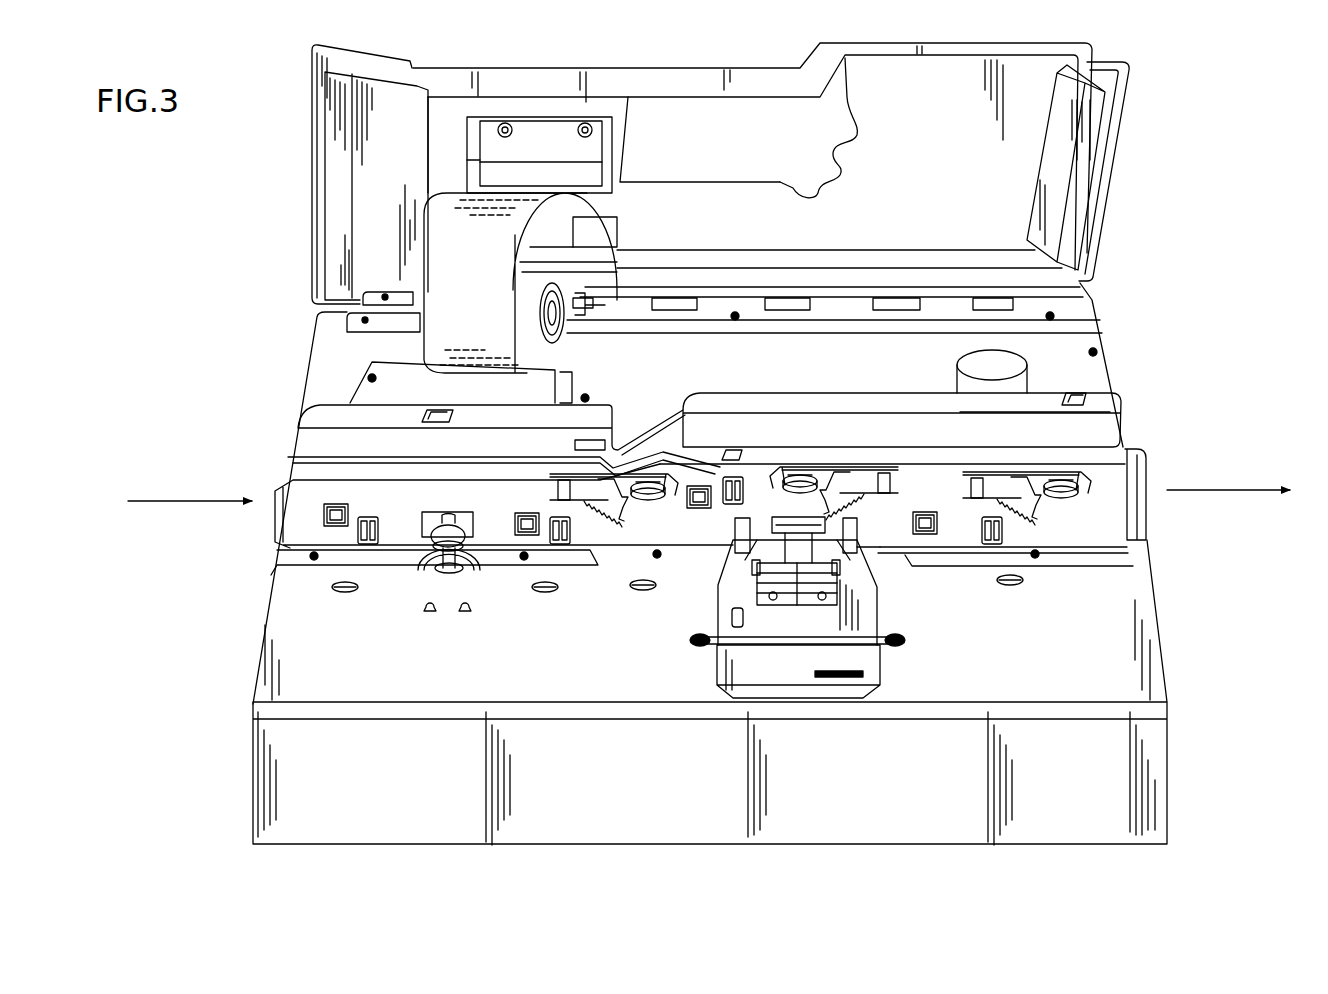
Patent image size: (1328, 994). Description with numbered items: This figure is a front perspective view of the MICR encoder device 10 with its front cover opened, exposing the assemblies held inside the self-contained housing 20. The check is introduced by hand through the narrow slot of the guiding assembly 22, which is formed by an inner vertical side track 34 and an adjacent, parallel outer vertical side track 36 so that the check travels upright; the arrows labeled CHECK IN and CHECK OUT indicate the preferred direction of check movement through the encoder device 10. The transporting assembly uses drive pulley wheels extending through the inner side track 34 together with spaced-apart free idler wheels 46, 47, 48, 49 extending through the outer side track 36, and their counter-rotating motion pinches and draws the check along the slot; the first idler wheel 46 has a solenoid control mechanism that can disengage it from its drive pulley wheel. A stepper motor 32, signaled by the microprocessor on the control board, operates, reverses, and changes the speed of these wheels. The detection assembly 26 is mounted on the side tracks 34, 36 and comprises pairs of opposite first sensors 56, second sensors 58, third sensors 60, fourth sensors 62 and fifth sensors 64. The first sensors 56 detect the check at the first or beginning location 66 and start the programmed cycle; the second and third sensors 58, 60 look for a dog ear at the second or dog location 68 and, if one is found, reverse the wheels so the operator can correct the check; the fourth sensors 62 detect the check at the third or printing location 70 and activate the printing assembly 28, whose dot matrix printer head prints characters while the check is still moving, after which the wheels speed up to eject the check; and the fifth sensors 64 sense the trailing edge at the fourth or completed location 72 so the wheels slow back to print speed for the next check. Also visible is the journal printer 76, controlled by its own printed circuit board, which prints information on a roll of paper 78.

The MICR encoder device 10 is at (1198, 104).
The housing 20 is at (1172, 758).
The guiding assembly 22 is at (751, 373).
The detection assembly 26 is at (291, 577).
The printing assembly 28 is at (884, 674).
The stepper motor 32 is at (1013, 358).
The inner vertical side track 34 is at (1098, 403).
The outer vertical side track 36 is at (1113, 524).
The free idler wheel 46 is at (470, 548).
The free idler wheel 47 is at (650, 500).
The free idler wheel 48 is at (805, 488).
The free idler wheel 49 is at (1073, 495).
The first sensors 56 is at (360, 530).
The second sensors 58 is at (549, 578).
The third sensors 60 is at (572, 528).
The fourth sensors 62 is at (735, 497).
The fifth sensors 64 is at (1003, 525).
The first location 66 is at (338, 440).
The second location 68 is at (583, 438).
The third location 70 is at (756, 428).
The fourth location 72 is at (995, 430).
The journal printer 76 is at (355, 373).
The roll of paper 78 is at (532, 297).